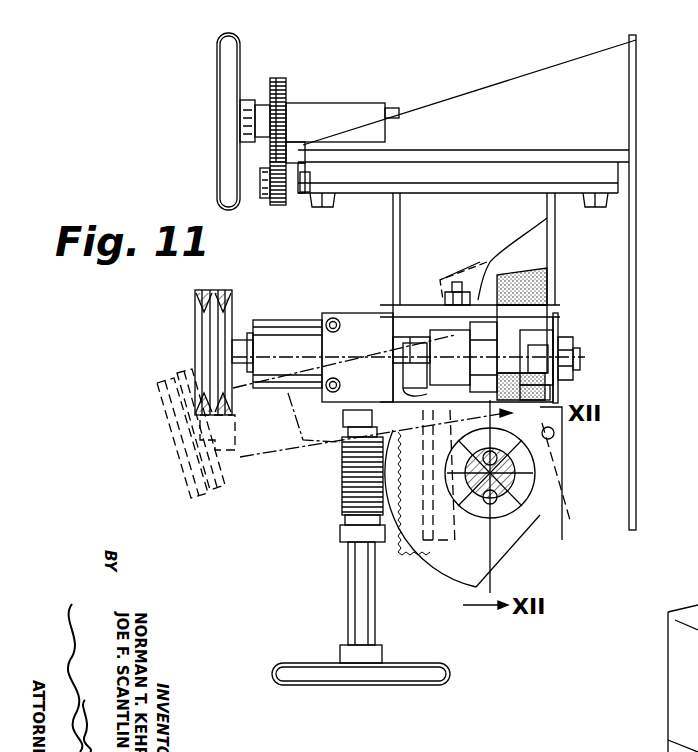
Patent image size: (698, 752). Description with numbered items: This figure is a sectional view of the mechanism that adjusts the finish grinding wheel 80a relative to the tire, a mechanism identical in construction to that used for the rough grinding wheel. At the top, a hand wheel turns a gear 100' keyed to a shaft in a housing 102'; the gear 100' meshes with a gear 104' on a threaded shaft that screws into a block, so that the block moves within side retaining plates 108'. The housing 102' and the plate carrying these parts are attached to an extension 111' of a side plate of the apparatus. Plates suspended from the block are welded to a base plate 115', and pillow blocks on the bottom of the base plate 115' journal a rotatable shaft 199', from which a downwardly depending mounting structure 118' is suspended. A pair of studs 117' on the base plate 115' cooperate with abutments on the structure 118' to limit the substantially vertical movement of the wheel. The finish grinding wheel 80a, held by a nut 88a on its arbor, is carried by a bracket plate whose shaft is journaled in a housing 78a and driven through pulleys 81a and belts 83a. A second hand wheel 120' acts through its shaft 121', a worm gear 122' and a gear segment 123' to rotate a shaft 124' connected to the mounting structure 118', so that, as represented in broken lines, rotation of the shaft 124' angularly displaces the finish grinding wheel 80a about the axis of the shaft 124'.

The gear 100' is at (297, 106).
The housing 102' is at (342, 108).
The gear 104' is at (297, 200).
The extension 111' is at (463, 159).
The side retaining plates 108' is at (639, 202).
The studs 117' is at (464, 270).
The base plate 115' is at (419, 284).
The finish grinding wheel 80a is at (522, 275).
The mounting structure 118' is at (384, 369).
The rotatable shaft 199' is at (568, 349).
The nut 88a is at (565, 360).
The shaft 124' is at (528, 496).
The gear segment 123' is at (462, 536).
The worm gear 122' is at (334, 476).
The shaft 121' is at (392, 602).
The hand wheel 120' is at (361, 692).
The pulleys 81a is at (210, 336).
The belts 83a is at (222, 292).
The housing 78a is at (265, 320).